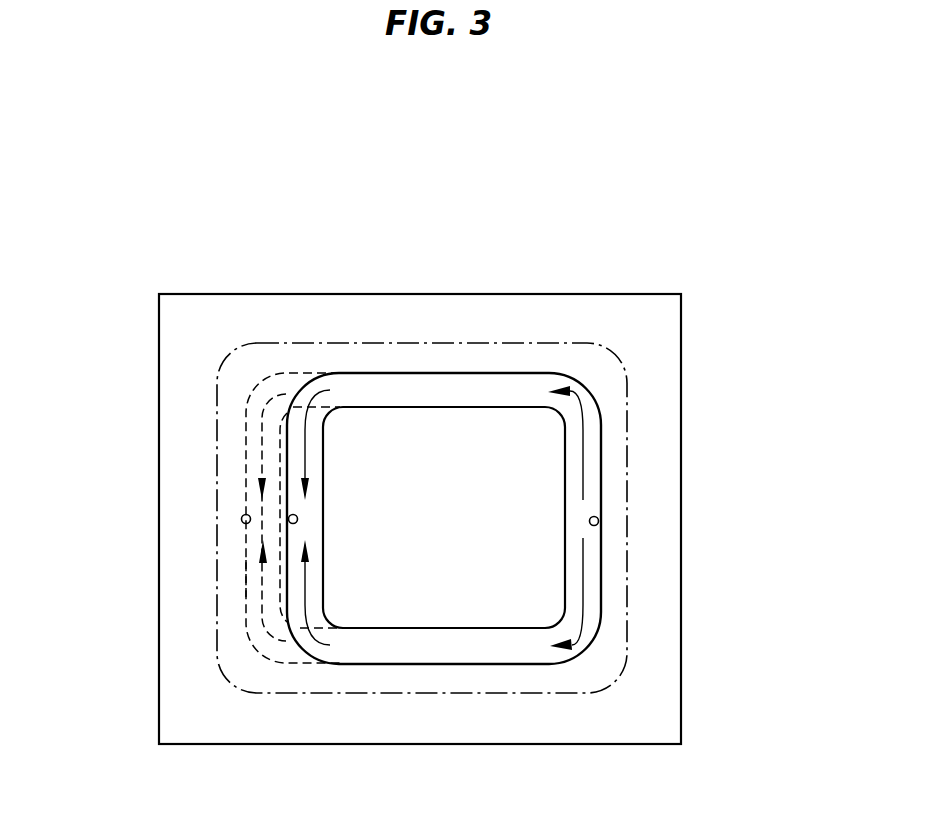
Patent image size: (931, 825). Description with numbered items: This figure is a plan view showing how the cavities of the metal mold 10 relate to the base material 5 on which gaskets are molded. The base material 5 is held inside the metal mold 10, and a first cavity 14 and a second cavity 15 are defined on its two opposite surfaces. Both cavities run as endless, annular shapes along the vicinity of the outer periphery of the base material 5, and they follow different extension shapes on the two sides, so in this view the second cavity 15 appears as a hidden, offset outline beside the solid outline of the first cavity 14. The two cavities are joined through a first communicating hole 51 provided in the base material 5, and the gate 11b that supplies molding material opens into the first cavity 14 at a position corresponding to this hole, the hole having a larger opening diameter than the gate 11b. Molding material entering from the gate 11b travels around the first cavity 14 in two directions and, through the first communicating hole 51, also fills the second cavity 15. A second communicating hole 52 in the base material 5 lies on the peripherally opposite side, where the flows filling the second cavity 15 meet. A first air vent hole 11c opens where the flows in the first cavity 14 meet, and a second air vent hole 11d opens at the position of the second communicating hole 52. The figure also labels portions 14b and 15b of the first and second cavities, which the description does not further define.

The metal mold 10 is at (692, 323).
The base material 5 is at (386, 330).
The first cavity 14 is at (463, 370).
The second cavity 15 is at (286, 372).
The gate 11b is at (710, 494).
The first communicating hole 51 is at (599, 520).
The first air vent hole 11c is at (289, 518).
The second air vent hole 11d is at (155, 515).
The second communicating hole 52 is at (241, 519).
The groove portion 14b is at (296, 531).
The seal portion 15b is at (250, 592).